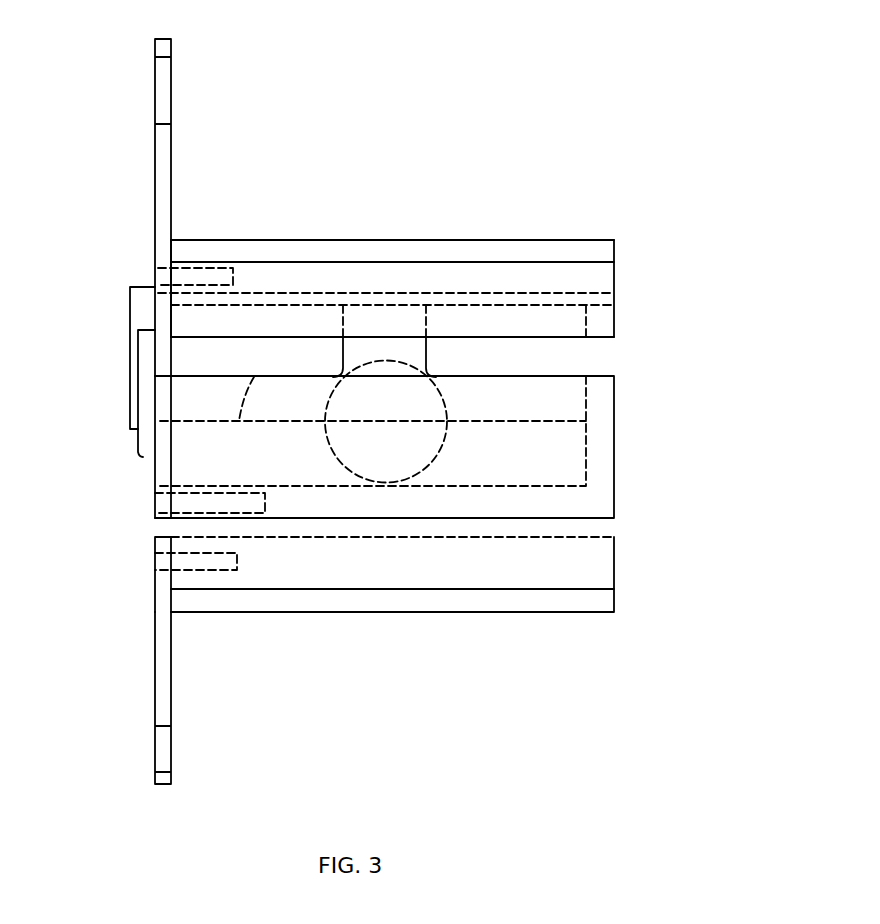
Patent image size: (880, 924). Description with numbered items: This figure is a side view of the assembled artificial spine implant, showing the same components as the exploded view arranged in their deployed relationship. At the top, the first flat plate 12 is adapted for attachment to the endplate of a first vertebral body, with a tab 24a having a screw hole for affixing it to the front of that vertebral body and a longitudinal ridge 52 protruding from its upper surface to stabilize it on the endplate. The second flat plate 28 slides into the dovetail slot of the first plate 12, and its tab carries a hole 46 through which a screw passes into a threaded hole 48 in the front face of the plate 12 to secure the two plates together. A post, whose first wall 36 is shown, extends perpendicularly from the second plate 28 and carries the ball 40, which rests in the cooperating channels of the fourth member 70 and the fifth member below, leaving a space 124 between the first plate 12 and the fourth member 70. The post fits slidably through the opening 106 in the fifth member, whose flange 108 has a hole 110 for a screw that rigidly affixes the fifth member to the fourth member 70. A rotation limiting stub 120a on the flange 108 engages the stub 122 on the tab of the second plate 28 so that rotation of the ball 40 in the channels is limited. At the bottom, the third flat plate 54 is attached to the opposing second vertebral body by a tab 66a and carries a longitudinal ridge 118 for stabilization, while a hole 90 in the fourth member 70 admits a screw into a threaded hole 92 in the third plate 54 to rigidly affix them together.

The first flat plate 12 is at (555, 264).
The tab 24a is at (155, 141).
The second flat plate 28 is at (582, 299).
The first wall 36 is at (384, 315).
The ball 40 is at (402, 459).
The hole 46 is at (156, 277).
The threaded hole 48 is at (205, 275).
The longitudinal ridge 52 is at (493, 239).
The third flat plate 54 is at (615, 567).
The tab 66a is at (155, 688).
The fourth member 70 is at (615, 456).
The hole 90 is at (154, 563).
The threaded hole 92 is at (242, 570).
The opening 106 is at (238, 421).
The flange 108 is at (160, 483).
The hole 110 is at (160, 503).
The longitudinal ridge 118 is at (443, 598).
The rotation limiting stub 120a is at (148, 454).
The stub 122 is at (137, 303).
The space 124 is at (604, 362).